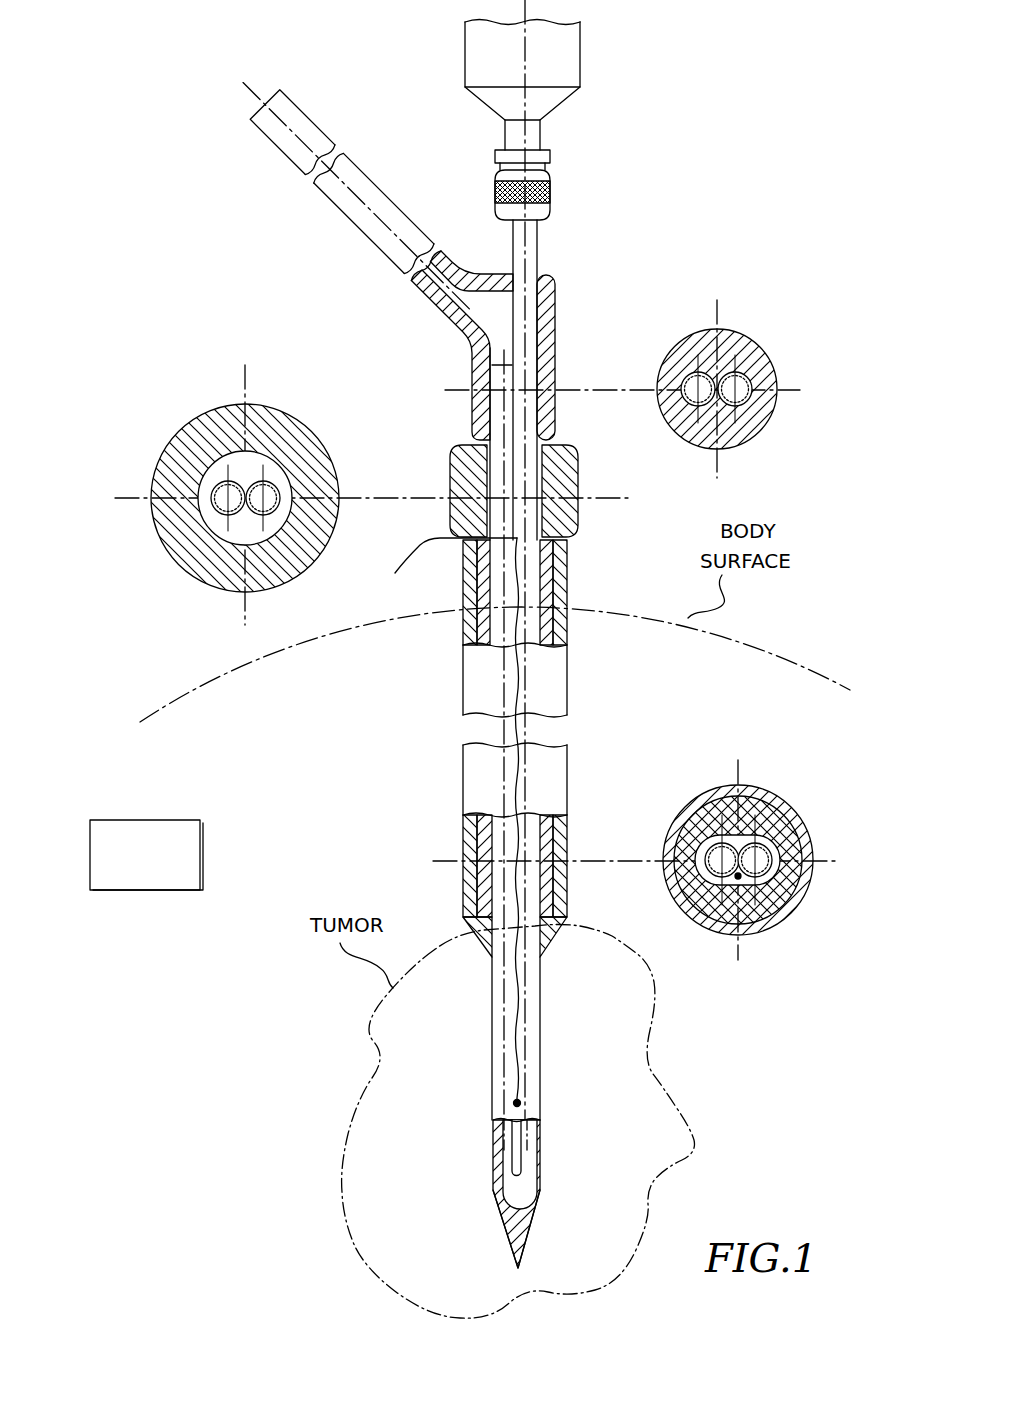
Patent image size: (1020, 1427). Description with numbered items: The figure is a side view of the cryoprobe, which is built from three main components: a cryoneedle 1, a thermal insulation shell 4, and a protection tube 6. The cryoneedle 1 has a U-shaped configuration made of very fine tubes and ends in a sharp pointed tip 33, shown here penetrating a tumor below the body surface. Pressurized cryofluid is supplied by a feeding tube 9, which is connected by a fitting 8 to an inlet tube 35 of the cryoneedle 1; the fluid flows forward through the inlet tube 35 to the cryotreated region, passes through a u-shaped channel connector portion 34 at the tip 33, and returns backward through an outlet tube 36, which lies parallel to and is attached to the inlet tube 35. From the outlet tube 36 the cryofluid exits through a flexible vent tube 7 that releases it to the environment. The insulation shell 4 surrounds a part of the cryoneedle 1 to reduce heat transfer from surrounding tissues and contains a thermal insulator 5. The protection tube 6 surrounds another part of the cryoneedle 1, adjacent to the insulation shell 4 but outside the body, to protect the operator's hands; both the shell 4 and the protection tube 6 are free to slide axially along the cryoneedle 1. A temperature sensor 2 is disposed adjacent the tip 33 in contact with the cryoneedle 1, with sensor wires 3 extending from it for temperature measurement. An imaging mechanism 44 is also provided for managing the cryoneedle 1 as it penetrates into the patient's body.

The cryoneedle 1 is at (540, 1052).
The temperature sensor 2 is at (514, 1104).
The sensor wires 3 is at (443, 547).
The thermal insulation shell 4 is at (556, 945).
The thermal insulator 5 is at (562, 857).
The protection tube 6 is at (578, 506).
The vent tube 7 is at (556, 340).
The fitting 8 is at (553, 183).
The feeding tube 9 is at (580, 88).
The tip 33 is at (505, 1232).
The u-shaped channel connector portion 34 is at (528, 1195).
The inlet tube 35 is at (532, 1003).
The outlet tube 36 is at (507, 1003).
The imaging mechanism 44 is at (205, 857).